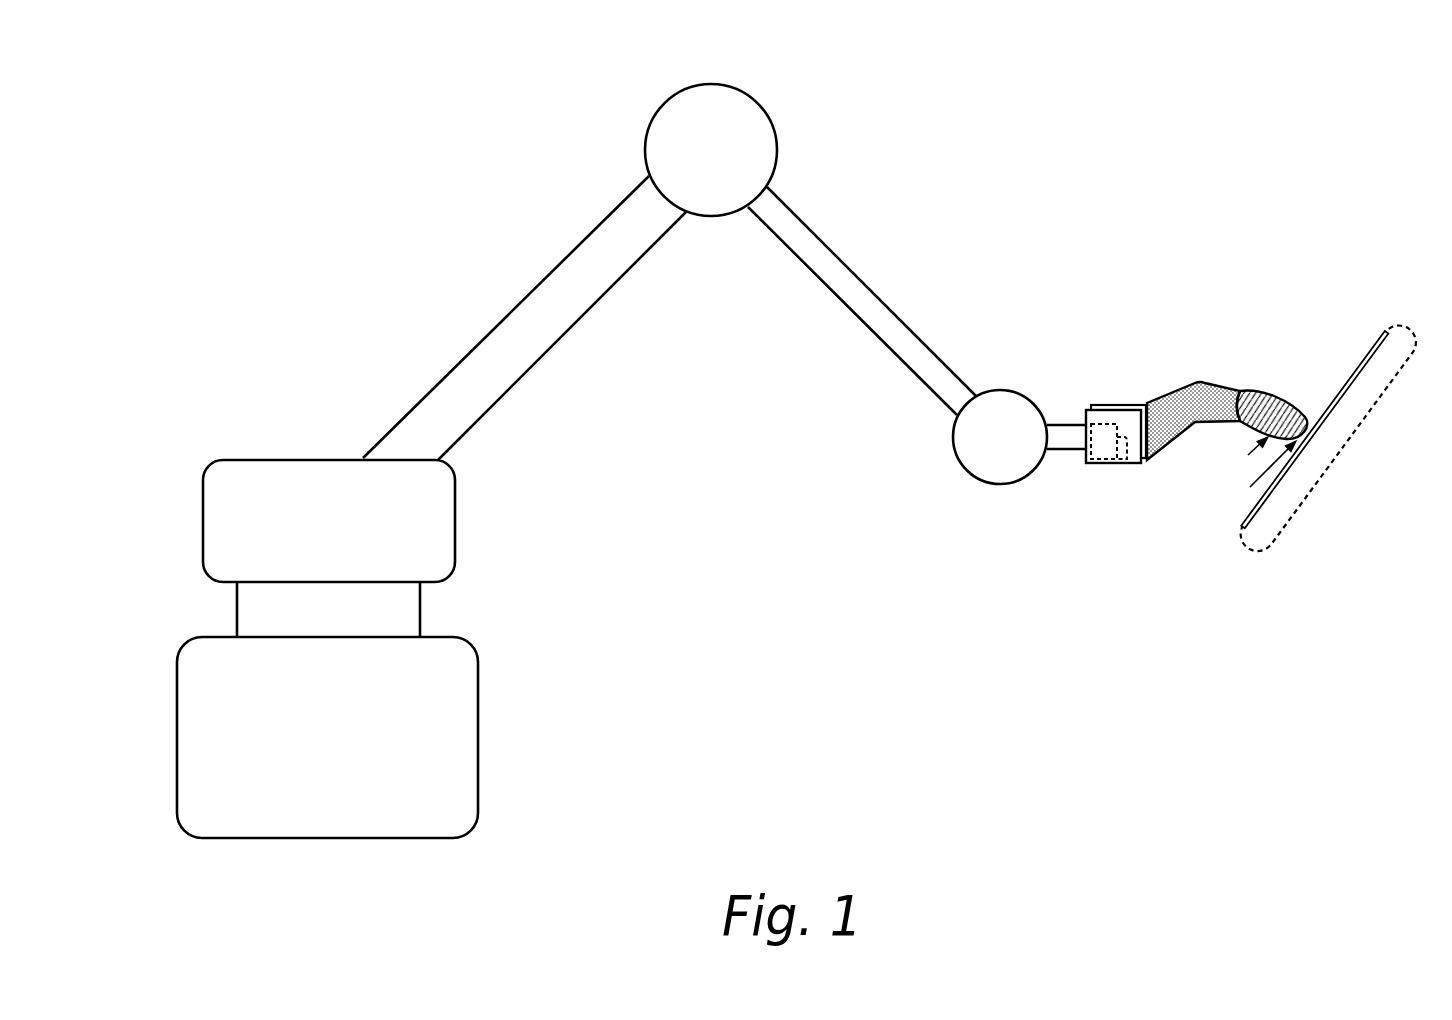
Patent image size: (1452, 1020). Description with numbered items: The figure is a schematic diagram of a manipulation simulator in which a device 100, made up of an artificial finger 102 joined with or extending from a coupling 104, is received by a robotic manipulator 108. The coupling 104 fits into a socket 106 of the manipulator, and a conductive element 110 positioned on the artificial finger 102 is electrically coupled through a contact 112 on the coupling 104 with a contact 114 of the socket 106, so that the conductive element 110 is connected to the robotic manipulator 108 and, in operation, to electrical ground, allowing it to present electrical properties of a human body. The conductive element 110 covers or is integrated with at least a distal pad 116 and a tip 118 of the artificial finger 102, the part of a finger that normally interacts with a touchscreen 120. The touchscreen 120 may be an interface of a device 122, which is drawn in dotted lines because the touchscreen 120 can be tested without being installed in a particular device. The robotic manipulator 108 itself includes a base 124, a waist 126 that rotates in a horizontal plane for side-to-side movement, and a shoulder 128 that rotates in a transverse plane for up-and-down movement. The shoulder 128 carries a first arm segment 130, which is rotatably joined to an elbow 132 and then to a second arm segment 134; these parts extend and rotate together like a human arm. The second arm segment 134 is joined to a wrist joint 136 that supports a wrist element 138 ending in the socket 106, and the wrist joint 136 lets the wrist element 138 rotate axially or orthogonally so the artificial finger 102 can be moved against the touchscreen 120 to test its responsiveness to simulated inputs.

The device 100 is at (1182, 356).
The artificial finger 102 is at (1228, 387).
The coupling 104 is at (1118, 406).
The socket 106 is at (1132, 464).
The robotic manipulator 108 is at (236, 309).
The conductive element 110 is at (1268, 391).
The contact 112 is at (1110, 460).
The contact 114 is at (1092, 455).
The distal pad 116 is at (1248, 455).
The tip 118 is at (1250, 487).
The touchscreen 120 is at (1243, 527).
The device 122 is at (1328, 465).
The base 124 is at (178, 683).
The waist 126 is at (235, 622).
The shoulder 128 is at (205, 520).
The first arm segment 130 is at (488, 333).
The elbow 132 is at (657, 112).
The second arm segment 134 is at (862, 322).
The wrist joint 136 is at (966, 472).
The wrist element 138 is at (1075, 424).